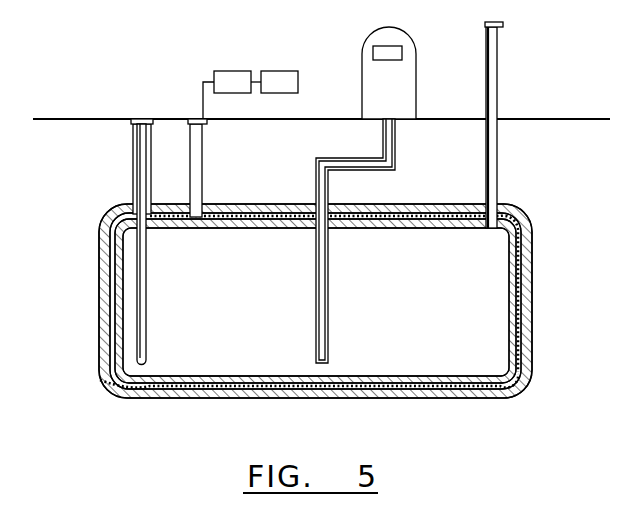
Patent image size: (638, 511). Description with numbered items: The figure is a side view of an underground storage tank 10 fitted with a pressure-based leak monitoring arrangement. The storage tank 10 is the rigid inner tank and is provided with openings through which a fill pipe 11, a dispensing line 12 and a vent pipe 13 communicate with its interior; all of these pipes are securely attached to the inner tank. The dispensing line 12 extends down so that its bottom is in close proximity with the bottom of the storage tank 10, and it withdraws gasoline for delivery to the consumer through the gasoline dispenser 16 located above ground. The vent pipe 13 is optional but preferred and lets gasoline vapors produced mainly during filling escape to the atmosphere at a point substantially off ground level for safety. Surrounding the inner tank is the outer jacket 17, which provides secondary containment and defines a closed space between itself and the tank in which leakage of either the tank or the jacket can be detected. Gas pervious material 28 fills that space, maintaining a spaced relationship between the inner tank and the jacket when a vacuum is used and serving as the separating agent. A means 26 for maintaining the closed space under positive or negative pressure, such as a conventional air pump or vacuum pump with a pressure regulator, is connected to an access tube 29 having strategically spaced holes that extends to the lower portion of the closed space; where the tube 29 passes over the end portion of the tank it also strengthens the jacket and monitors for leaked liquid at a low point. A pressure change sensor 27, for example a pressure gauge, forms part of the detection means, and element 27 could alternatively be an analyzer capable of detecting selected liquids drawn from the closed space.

The storage tank 10 is at (315, 305).
The fill pipe 11 is at (113, 242).
The dispensing line 12 is at (340, 241).
The vent pipe 13 is at (525, 125).
The gasoline dispenser 16 is at (412, 73).
The outer jacket 17 is at (315, 333).
The means for maintaining the closed space under pressure 26 is at (227, 120).
The pressure change sensor 27 is at (287, 58).
The gas pervious material 28 is at (309, 271).
The access tube 29 is at (315, 330).